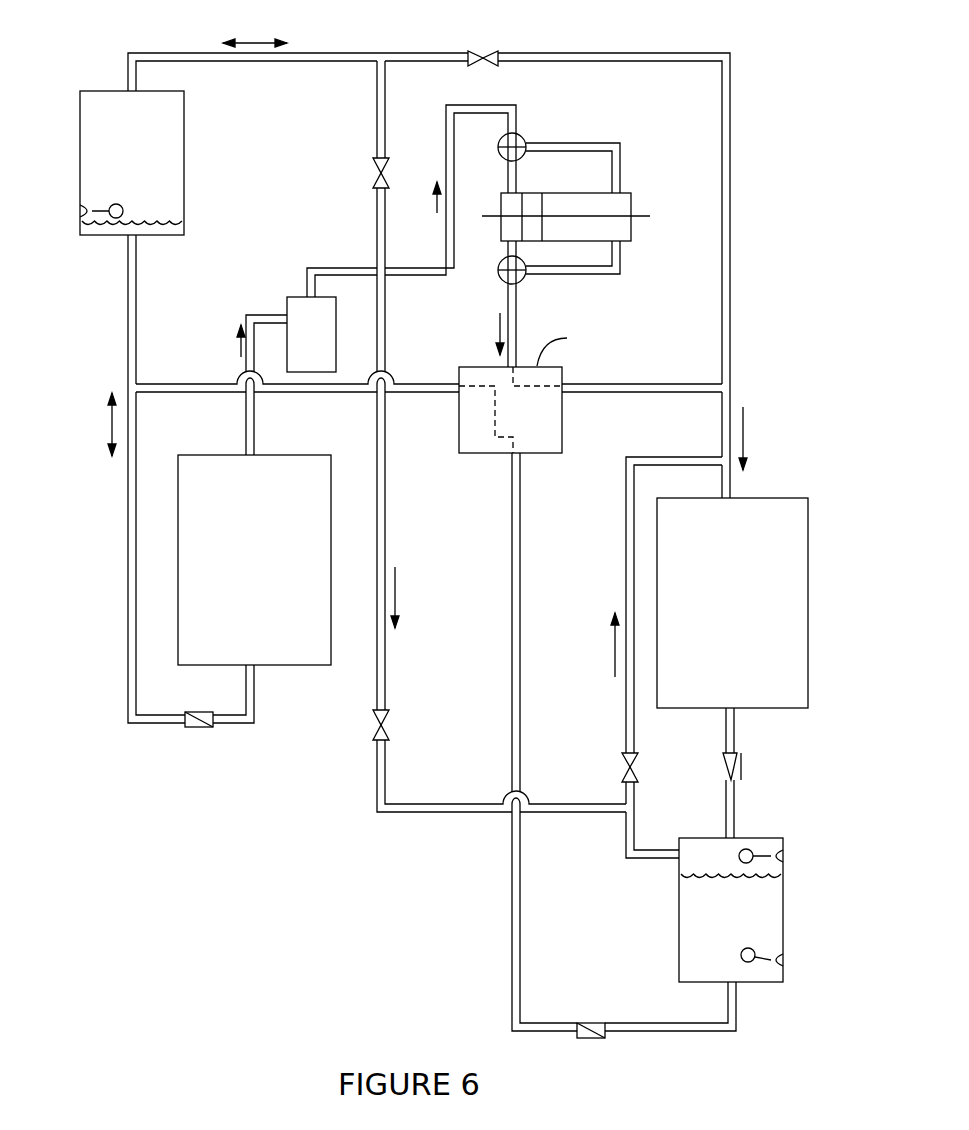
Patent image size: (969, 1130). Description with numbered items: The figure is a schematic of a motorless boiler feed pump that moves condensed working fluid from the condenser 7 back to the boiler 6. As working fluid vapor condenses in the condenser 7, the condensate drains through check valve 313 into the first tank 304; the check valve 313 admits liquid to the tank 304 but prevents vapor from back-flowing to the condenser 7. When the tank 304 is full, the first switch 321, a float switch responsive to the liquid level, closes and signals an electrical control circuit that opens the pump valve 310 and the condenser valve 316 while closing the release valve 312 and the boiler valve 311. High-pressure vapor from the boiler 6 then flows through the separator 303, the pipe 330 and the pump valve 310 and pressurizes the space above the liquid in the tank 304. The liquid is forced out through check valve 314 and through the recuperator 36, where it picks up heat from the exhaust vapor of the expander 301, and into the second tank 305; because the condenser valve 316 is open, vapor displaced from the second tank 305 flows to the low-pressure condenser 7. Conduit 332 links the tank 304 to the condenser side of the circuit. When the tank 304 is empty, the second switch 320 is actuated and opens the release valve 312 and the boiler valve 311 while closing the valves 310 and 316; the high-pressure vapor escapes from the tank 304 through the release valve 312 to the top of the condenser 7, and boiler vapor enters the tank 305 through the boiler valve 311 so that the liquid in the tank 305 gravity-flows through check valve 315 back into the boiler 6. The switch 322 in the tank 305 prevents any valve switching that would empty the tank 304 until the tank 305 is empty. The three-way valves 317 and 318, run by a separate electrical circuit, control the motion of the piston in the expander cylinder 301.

The second tank 305 is at (152, 133).
The switch 322 is at (80, 211).
The condenser valve 316 is at (483, 50).
The boiler valve 311 is at (373, 175).
The three-way valve 317 is at (520, 134).
The expander 301 is at (597, 212).
The three-way valve 318 is at (518, 283).
The recuperator 36 is at (530, 423).
The separator 303 is at (331, 345).
The boiler 6 is at (260, 531).
The pipe 330 is at (387, 555).
The pump valve 310 is at (376, 726).
The check valve 315 is at (196, 729).
The conduit 332 is at (623, 568).
The release valve 312 is at (623, 768).
The check valve 313 is at (742, 773).
The condenser 7 is at (740, 576).
The first tank 304 is at (750, 910).
The first switch 321 is at (783, 857).
The second switch 320 is at (783, 960).
The check valve 314 is at (593, 1022).